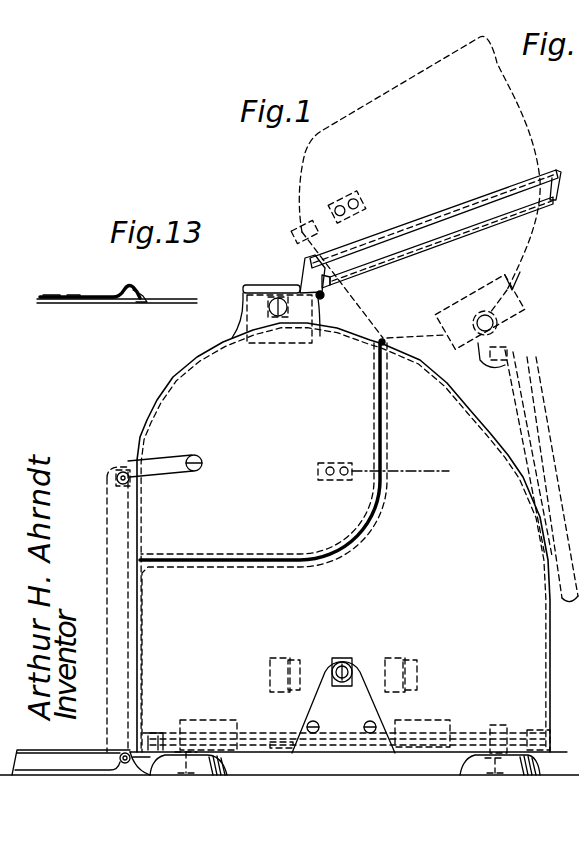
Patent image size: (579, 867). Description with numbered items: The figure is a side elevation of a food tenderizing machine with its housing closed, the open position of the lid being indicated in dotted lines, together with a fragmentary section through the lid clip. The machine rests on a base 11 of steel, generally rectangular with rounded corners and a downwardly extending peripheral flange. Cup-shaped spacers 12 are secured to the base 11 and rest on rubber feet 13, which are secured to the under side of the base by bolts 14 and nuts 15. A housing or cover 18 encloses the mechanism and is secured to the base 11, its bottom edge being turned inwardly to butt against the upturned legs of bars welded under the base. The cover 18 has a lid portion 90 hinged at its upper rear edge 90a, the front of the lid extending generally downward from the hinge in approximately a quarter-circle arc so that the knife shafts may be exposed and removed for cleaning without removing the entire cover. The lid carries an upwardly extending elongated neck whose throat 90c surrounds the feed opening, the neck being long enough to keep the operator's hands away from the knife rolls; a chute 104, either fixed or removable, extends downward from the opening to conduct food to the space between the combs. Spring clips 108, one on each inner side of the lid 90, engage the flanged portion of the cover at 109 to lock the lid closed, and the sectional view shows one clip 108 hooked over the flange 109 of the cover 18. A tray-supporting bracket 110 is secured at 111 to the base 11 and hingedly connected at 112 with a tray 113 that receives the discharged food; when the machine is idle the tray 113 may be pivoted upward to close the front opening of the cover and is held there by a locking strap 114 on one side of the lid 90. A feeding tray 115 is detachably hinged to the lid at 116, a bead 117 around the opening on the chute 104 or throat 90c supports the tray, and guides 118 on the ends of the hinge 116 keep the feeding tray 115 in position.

In FIG. 1, the base 11 is at (257, 736).
In FIG. 1, the cup-shaped spacers 12 is at (227, 553).
In FIG. 1, the rubber feet 13 is at (449, 490).
In FIG. 1, the bolts 14 is at (200, 733).
In FIG. 1, the nuts 15 is at (178, 733).
In FIG. 1, the housing or cover 18 is at (437, 389).
In FIG. 13, the housing or cover 18 is at (185, 305).
In FIG. 1, the lid portion 90 is at (168, 406).
In FIG. 1, the upper rear edge (hinge) 90a is at (387, 343).
In FIG. 1, the throat 90c is at (241, 312).
In FIG. 1, the chute 104 is at (250, 343).
In FIG. 1, the spring clips 108 is at (400, 470).
In FIG. 13, the spring clips 108 is at (107, 298).
In FIG. 1, the flanged portion of the cover 109 is at (385, 429).
In FIG. 13, the flanged portion of the cover 109 is at (130, 302).
In FIG. 1, the tray-supporting bracket 110 is at (133, 767).
In FIG. 1, the securing point of bracket 111 is at (143, 733).
In FIG. 1, the hinge connection 112 is at (123, 765).
In FIG. 1, the tray 113 is at (46, 780).
In FIG. 1, the locking strap 114 is at (167, 474).
In FIG. 1, the feeding tray 115 is at (427, 218).
In FIG. 1, the hinge 116 is at (273, 298).
In FIG. 1, the bead 117 is at (310, 283).
In FIG. 1, the guides 118 is at (352, 292).